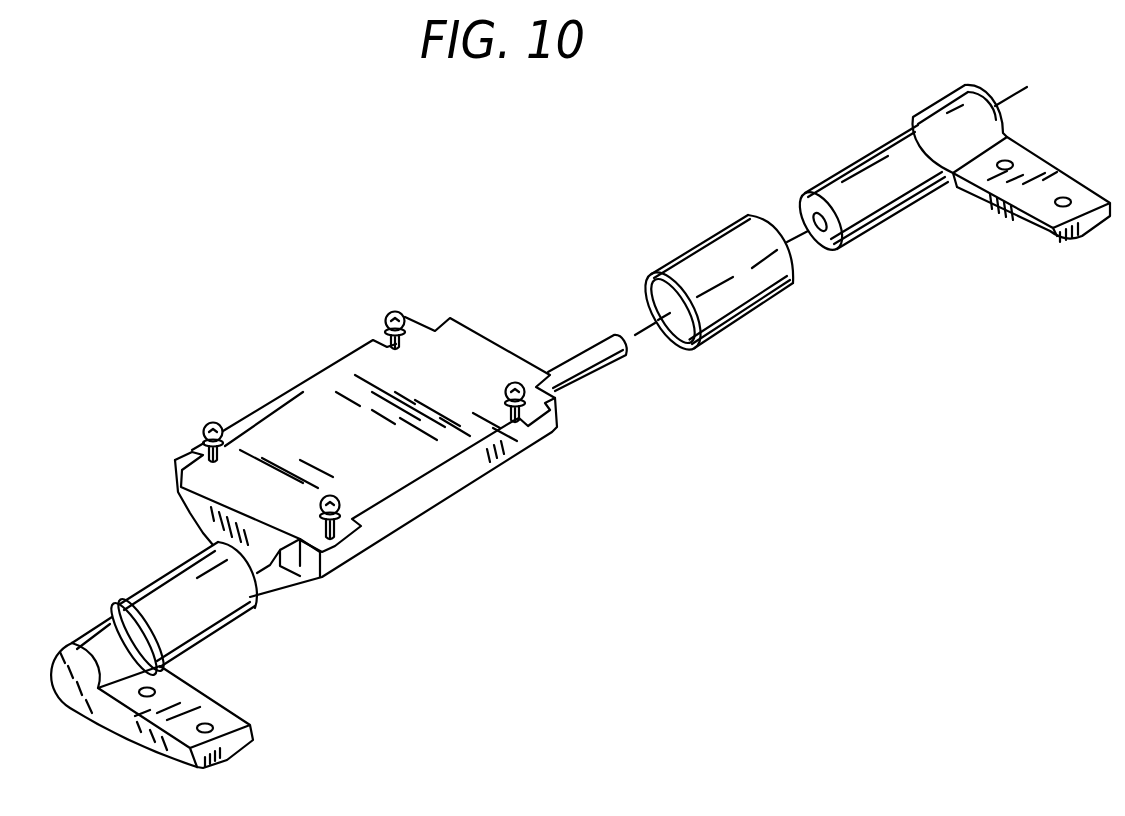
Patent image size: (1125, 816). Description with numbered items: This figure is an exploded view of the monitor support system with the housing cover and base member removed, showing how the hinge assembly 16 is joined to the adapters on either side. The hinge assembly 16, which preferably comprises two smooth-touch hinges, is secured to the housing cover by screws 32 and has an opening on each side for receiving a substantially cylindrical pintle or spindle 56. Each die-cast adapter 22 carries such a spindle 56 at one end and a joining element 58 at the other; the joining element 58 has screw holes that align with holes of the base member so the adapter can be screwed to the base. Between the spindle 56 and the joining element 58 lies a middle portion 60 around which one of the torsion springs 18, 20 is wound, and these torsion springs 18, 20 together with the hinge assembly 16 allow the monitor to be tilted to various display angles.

The hinge assembly 16 is at (285, 415).
The torsion spring 18 is at (163, 586).
The torsion spring 20 is at (692, 264).
The adapter 22 is at (92, 641).
The screws 32 is at (399, 312).
The spindle 56 is at (609, 365).
The joining element 58 is at (971, 107).
The middle portion 60 is at (849, 178).